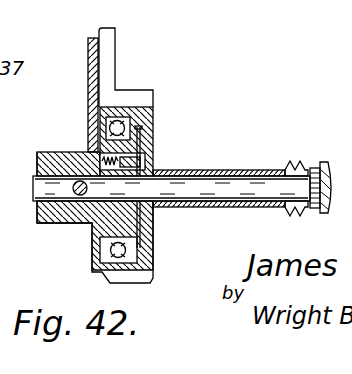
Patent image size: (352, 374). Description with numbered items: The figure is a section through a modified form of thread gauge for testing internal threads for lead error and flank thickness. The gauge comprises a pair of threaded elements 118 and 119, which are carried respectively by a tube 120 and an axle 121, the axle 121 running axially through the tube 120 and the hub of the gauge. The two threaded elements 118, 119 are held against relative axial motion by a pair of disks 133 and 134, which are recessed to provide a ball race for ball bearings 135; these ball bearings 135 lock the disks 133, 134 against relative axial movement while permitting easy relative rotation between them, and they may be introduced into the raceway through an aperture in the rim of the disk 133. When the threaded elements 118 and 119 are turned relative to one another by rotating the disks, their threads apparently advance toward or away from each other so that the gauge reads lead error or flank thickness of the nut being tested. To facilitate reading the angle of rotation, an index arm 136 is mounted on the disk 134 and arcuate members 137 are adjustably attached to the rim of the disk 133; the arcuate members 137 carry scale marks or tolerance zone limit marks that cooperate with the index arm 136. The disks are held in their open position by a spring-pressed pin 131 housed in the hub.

The threaded element 118 is at (293, 162).
The threaded element 119 is at (323, 162).
The tube 120 is at (257, 169).
The axle 121 is at (200, 187).
The spring-pressed pin 131 is at (147, 153).
The disk 133 is at (147, 115).
The disk 134 is at (120, 210).
The ball bearings 135 is at (137, 248).
The index arm 136 is at (88, 47).
The arcuate members 137 is at (110, 59).